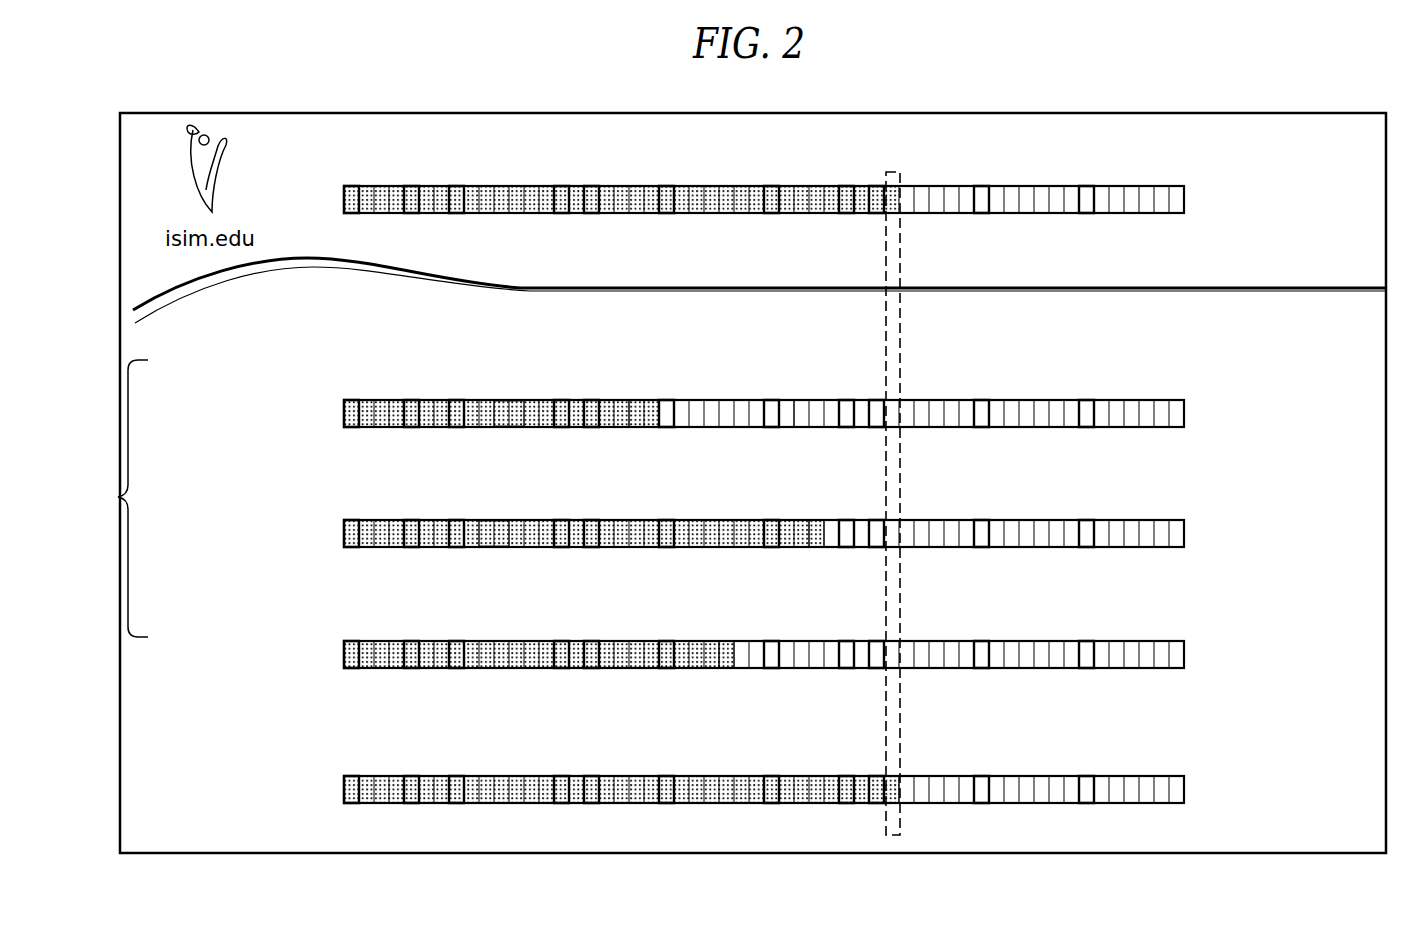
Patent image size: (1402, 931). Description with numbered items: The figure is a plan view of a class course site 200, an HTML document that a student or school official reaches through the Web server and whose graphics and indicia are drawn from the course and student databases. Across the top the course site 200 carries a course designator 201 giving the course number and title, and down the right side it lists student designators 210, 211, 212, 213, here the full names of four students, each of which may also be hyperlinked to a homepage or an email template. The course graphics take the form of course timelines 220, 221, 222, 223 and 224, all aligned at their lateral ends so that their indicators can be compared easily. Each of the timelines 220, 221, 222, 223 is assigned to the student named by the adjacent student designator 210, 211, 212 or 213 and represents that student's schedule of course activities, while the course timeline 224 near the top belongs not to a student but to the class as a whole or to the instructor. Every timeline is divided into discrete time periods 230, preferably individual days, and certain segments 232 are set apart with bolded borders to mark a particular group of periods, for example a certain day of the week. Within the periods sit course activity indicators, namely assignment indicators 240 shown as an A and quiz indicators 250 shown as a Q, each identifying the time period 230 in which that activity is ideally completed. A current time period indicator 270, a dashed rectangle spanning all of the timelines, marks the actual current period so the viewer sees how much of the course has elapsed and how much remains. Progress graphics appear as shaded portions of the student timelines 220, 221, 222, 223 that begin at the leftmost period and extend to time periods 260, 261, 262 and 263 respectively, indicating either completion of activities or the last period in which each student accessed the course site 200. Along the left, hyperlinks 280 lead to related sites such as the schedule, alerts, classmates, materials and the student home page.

The course site 200 is at (1383, 141).
The course designator 201 is at (798, 134).
The student designator 210 is at (1288, 398).
The student designator 211 is at (1288, 520).
The student designator 212 is at (1288, 641).
The student designator 213 is at (1288, 774).
The course timeline 220 is at (782, 393).
The course timeline 221 is at (782, 513).
The course timeline 222 is at (782, 666).
The course timeline 223 is at (782, 769).
The course timeline 224 is at (1143, 186).
The time period 230 is at (623, 520).
The segment 232 is at (668, 668).
The assignment indicator 240 is at (665, 400).
The quiz indicator 250 is at (784, 400).
The time period 260 is at (638, 400).
The time period 261 is at (820, 520).
The time period 262 is at (733, 641).
The time period 263 is at (890, 776).
The current time period indicator 270 is at (900, 357).
The hyperlinks 280 is at (116, 497).